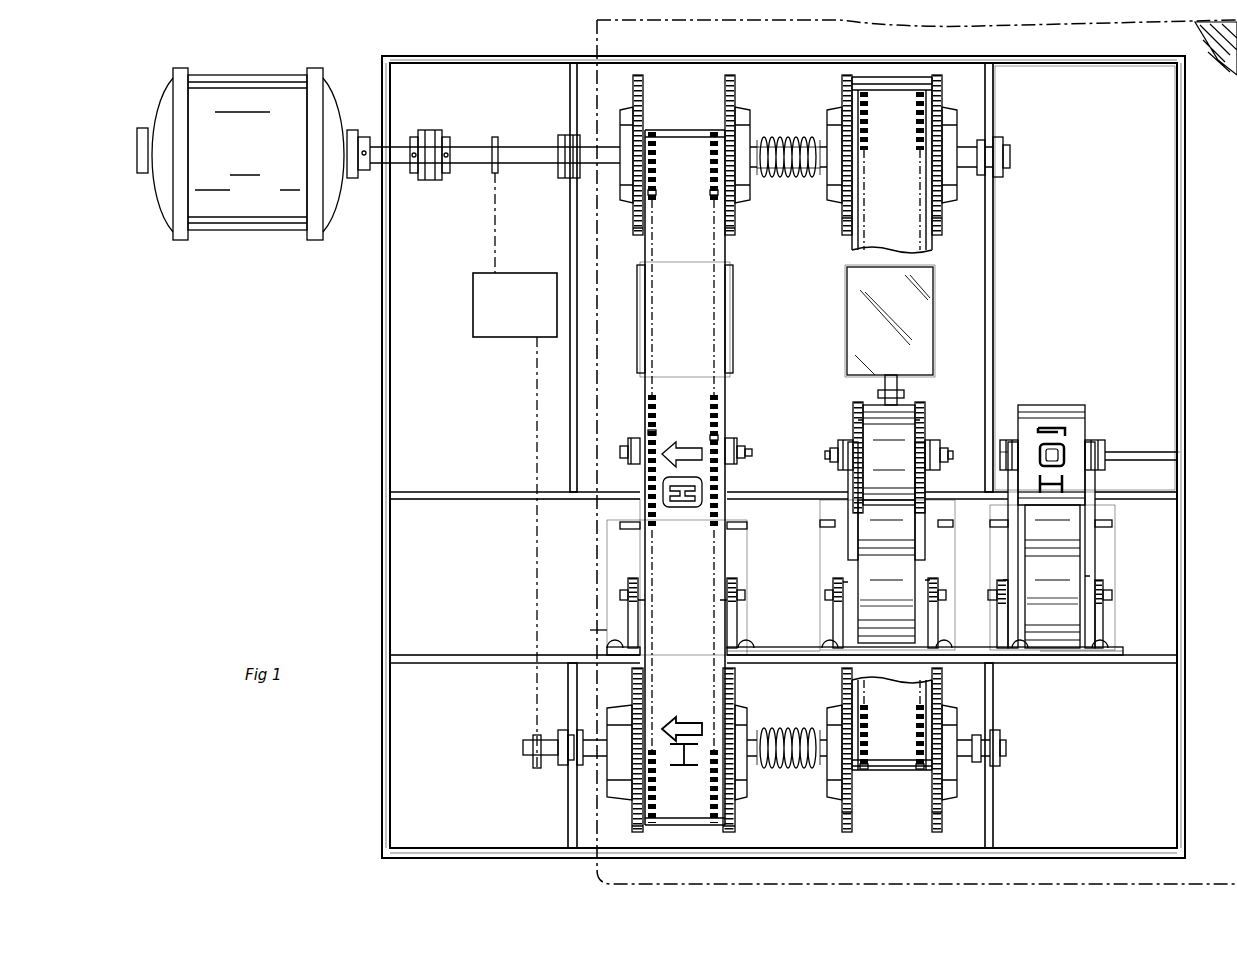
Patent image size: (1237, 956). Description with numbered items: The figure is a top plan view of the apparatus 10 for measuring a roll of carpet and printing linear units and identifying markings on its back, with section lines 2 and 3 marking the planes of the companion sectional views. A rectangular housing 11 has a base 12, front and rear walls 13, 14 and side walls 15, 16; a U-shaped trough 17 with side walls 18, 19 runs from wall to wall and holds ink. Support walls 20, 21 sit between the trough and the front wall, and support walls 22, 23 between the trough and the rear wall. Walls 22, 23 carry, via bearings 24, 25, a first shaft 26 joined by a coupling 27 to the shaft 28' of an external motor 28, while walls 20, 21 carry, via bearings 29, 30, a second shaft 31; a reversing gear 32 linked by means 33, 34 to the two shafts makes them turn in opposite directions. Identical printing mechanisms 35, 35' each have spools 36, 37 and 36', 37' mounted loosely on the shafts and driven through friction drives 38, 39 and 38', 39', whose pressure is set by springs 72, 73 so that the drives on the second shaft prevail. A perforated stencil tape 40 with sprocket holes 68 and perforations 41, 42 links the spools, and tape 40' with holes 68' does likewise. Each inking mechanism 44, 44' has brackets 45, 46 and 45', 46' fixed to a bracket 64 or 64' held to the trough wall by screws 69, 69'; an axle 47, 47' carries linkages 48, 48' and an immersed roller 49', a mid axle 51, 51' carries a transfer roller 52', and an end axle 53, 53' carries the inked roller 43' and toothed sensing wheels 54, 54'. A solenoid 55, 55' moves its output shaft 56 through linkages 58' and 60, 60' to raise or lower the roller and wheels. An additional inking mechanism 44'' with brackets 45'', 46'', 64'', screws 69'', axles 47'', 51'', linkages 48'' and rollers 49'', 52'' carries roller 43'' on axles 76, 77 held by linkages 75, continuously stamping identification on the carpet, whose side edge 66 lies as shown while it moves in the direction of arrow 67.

The section line 2- 2 is at (787, 65).
The section line 3- 3 is at (383, 870).
The apparatus 10 is at (333, 492).
The housing 11 is at (1138, 210).
The base 12 is at (1085, 278).
The front wall 13 is at (425, 850).
The rear wall 14 is at (437, 58).
The side wall 15 is at (382, 254).
The side wall 16 is at (1185, 256).
The U-shaped trough 17 is at (515, 577).
The trough side wall 18 is at (440, 663).
The trough side wall 19 is at (430, 490).
The vertical support wall 20 is at (568, 820).
The vertical support wall 21 is at (995, 806).
The vertical support wall 22 is at (567, 96).
The vertical support wall 23 is at (993, 105).
The bearing 24 is at (560, 166).
The bearing 25 is at (1010, 152).
The first rotatable shaft 26 is at (475, 148).
The coupling 27 is at (432, 130).
The motor 28 is at (240, 167).
The motor shaft 28' is at (368, 171).
The bearing 29 is at (560, 765).
The bearing 30 is at (1002, 742).
The second rotatable shaft 31 is at (520, 748).
The reversing gear 32 is at (487, 337).
The mechanical means 33 is at (493, 213).
The mechanical means 34 is at (535, 413).
The first printing mechanism 35 is at (703, 317).
The second printing mechanism 35' is at (866, 321).
The first spool 36 is at (684, 238).
The first spool 36' is at (892, 219).
The second spool 37 is at (681, 825).
The second spool 37' is at (892, 814).
The first friction drives 38 is at (687, 155).
The first friction drives 38' is at (893, 155).
The second friction drives 39 is at (696, 750).
The second friction drives 39' is at (896, 750).
The tape 40 is at (685, 477).
The tape 40' is at (892, 423).
The perforation 41 is at (678, 507).
The perforation 42 is at (680, 720).
The inked roller 43' is at (889, 457).
The roller 43'' is at (1061, 511).
The inking mechanism 44 is at (693, 587).
The inking mechanism 44' is at (869, 575).
The additional inking mechanism 44'' is at (1077, 577).
The first bracket 45 is at (617, 613).
The first bracket 45' is at (815, 613).
The bracket 45'' is at (980, 614).
The second bracket 46 is at (750, 613).
The second bracket 46' is at (955, 613).
The bracket 46'' is at (1124, 614).
The axle 47 is at (655, 591).
The axle 47' is at (865, 597).
The axle 47'' is at (1071, 591).
The linkages 48 is at (678, 618).
The linkages 48' is at (886, 589).
The linkages 48'' is at (1046, 584).
The first roller 49' is at (886, 610).
The roller 49'' is at (1052, 606).
The second axle 51 is at (674, 542).
The second axle 51' is at (869, 514).
The axle 51'' is at (1074, 516).
The transfer roller 52' is at (886, 542).
The roller 52'' is at (1052, 576).
The third axle 53 is at (754, 445).
The third axle 53' is at (874, 463).
The toothed sensing wheels 54 is at (690, 421).
The toothed sensing wheels 54' is at (884, 414).
The solenoid switch 55 is at (664, 319).
The solenoid switch 55' is at (909, 321).
The output shaft 56 is at (880, 381).
The linkages 58' is at (912, 389).
The first pair of linkages 60 is at (686, 462).
The first pair of linkages 60' is at (887, 452).
The second bracket 64 is at (865, 644).
The second bracket 64' is at (774, 672).
The bracket 64'' is at (1081, 673).
The side edge 66 is at (590, 630).
The arrow 67 is at (1215, 378).
The sprocket holes 68 is at (683, 520).
The sprocket holes 68' is at (892, 781).
The screws 69 is at (713, 635).
The screws 69' is at (982, 664).
The screws 69'' is at (1123, 644).
The spring 72 is at (775, 140).
The spring 73 is at (800, 770).
The linkages 75 is at (1008, 446).
The axle 76 is at (1000, 463).
The axle 77 is at (1133, 461).